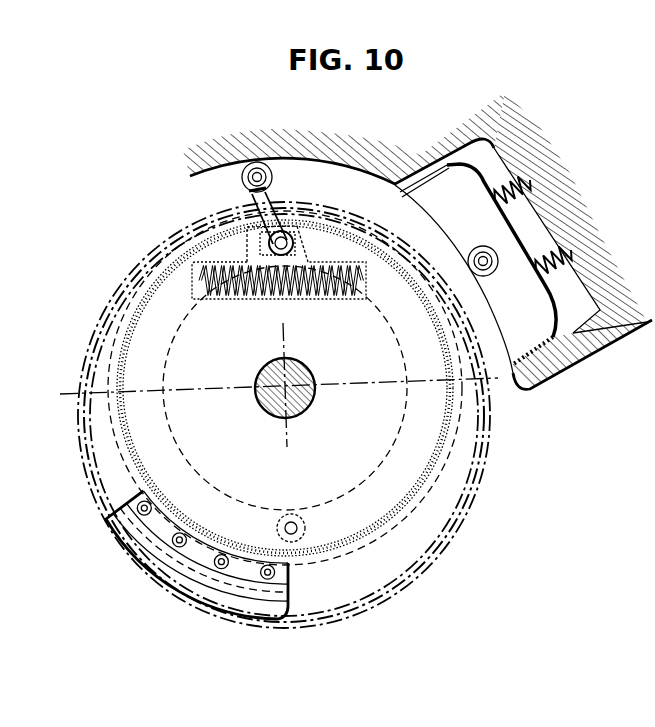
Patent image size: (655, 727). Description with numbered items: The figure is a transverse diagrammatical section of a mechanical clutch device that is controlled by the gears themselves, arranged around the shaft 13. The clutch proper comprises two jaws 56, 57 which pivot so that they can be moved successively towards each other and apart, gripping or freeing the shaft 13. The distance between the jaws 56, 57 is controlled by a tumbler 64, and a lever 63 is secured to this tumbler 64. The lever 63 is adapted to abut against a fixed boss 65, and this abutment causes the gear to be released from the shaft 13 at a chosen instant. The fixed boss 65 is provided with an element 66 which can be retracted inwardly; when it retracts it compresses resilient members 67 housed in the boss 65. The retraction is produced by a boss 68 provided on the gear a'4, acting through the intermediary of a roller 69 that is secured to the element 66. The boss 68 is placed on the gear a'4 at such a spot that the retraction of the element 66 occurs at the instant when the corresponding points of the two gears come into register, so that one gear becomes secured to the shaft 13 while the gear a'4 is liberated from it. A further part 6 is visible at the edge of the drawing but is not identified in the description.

The housing block 6 is at (563, 265).
The shaft 13 is at (303, 403).
The jaw 56 is at (148, 443).
The jaw 57 is at (423, 432).
The lever 63 is at (260, 208).
The tumbler 64 is at (260, 241).
The fixed boss 65 is at (243, 143).
The element 66 is at (460, 192).
The resilient members 67 is at (533, 188).
The boss 68 is at (190, 588).
The roller 69 is at (498, 255).
The gear a'4 is at (295, 415).